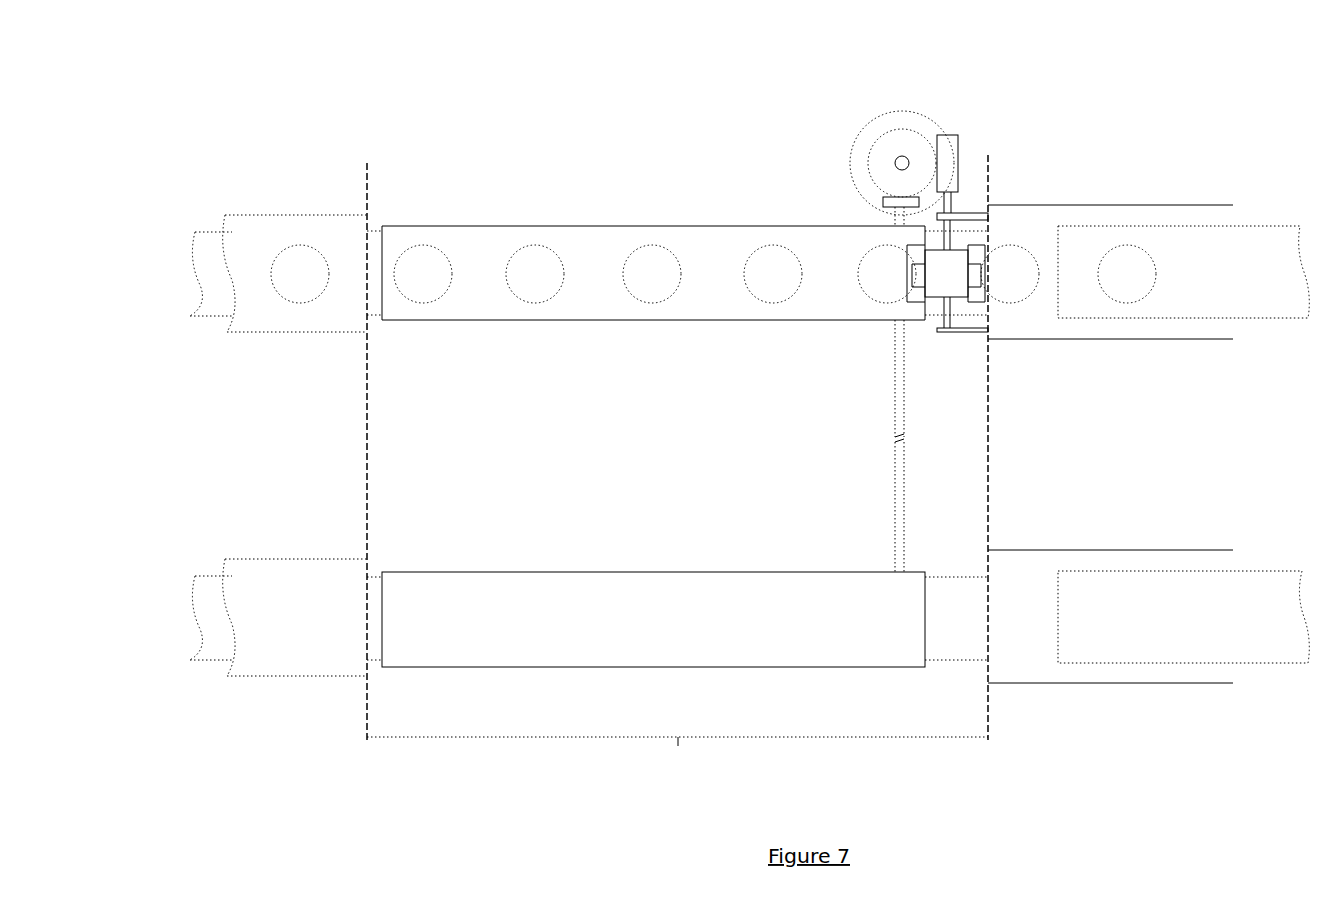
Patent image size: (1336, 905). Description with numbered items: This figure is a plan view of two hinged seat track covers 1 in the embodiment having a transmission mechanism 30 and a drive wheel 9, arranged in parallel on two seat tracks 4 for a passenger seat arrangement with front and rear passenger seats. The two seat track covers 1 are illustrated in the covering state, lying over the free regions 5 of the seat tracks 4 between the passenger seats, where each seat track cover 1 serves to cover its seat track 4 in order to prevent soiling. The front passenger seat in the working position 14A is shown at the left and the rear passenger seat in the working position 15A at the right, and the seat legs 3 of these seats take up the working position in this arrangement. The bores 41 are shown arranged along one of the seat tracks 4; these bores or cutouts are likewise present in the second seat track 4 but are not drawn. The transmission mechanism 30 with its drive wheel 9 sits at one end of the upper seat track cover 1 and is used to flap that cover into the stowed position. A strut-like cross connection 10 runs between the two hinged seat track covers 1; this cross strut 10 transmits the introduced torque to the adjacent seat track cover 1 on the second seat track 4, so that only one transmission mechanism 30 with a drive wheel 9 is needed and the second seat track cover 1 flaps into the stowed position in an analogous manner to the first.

The seat track cover 1 is at (584, 179).
The seat leg 3 is at (1252, 228).
The seat track 4 is at (203, 286).
The free region 5 is at (677, 473).
The drive wheel 9 is at (953, 297).
The cross connection 10 is at (895, 478).
The front passenger seat in the working position 14A is at (289, 203).
The rear passenger seat in the working position 15A is at (1073, 189).
The transmission mechanism 30 is at (865, 86).
The bore 41 is at (535, 245).